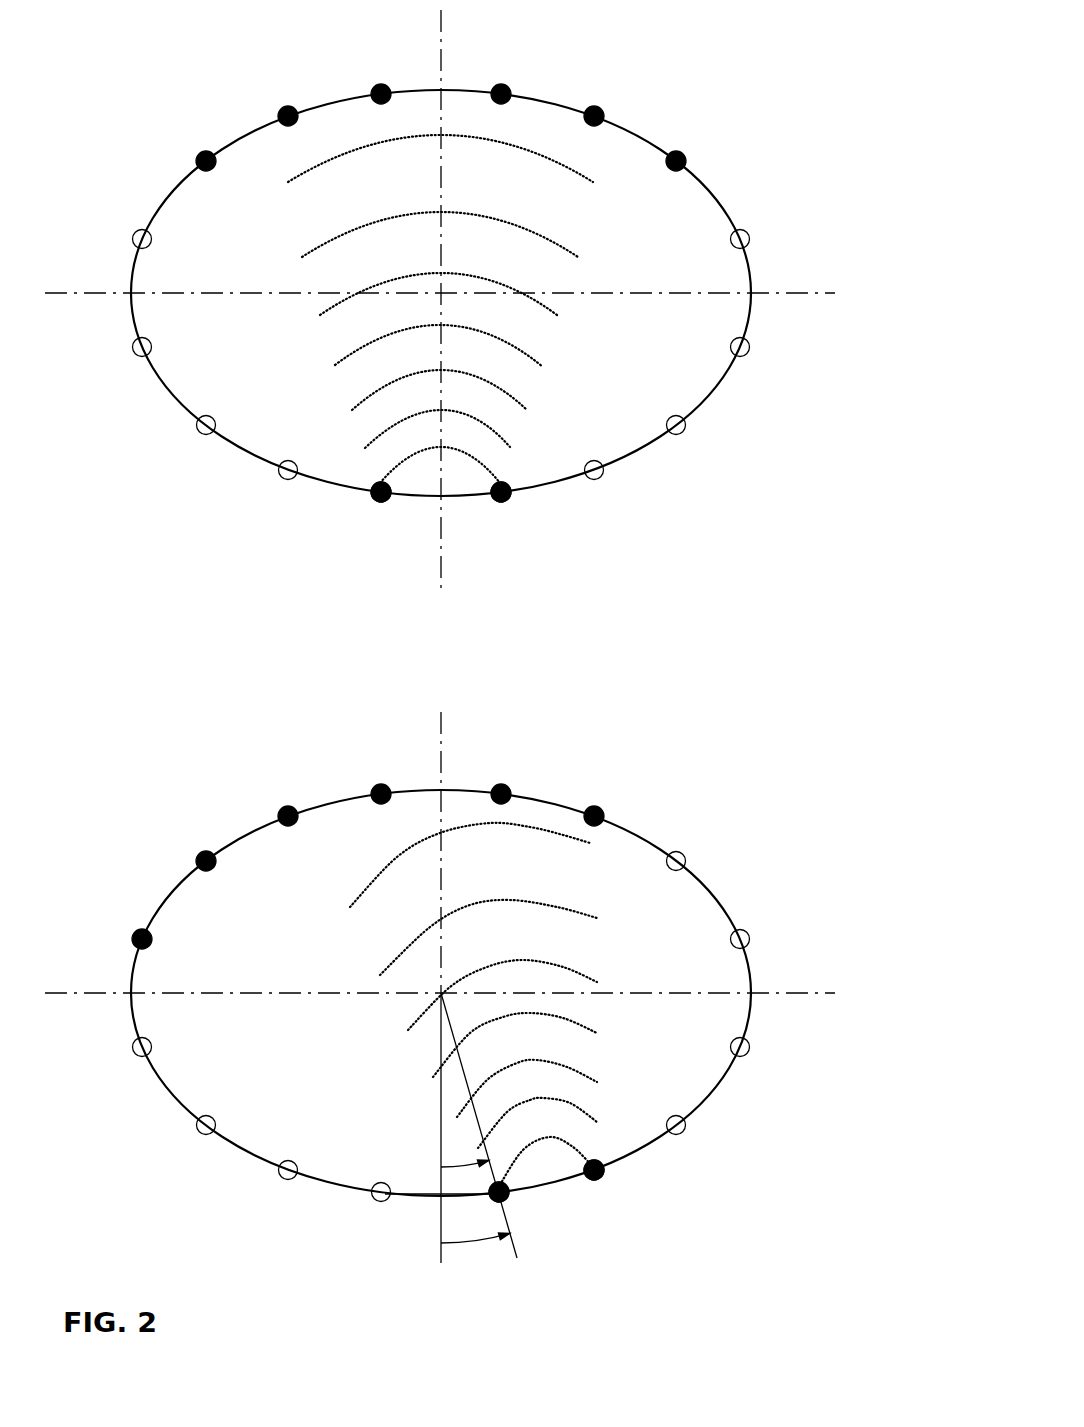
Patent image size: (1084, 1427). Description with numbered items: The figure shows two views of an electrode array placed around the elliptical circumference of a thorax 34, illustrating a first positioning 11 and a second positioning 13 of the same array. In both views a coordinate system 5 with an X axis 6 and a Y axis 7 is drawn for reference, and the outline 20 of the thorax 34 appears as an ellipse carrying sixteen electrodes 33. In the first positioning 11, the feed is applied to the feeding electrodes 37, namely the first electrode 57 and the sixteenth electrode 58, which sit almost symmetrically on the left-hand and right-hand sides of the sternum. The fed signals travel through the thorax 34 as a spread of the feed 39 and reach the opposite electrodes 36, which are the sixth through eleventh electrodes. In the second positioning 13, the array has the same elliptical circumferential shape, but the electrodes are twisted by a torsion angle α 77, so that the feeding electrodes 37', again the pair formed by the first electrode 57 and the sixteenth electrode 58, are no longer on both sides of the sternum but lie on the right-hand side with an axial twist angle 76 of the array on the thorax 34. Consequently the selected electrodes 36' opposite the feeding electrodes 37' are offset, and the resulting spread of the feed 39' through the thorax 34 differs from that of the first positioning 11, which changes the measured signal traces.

The coordinate system 5 is at (447, 498).
The X axis 6 is at (835, 292).
The Y axis 7 is at (446, 30).
The first positioning 11 is at (803, 464).
The second positioning 13 is at (803, 785).
The vehicle outline 20 is at (545, 643).
The electrodes 33 is at (134, 232).
The thorax 34 is at (545, 643).
The opposite electrodes 36 is at (449, 94).
The selected electrodes 36' is at (372, 832).
The feeding electrodes 37 is at (441, 527).
The feeding electrodes 37' is at (589, 1199).
The spread of the feed 39 is at (559, 300).
The spread of the feed 39' is at (583, 960).
The electrode E1 57 is at (377, 503).
The electrode E16 58 is at (503, 500).
The axial twist angle 76 is at (472, 1247).
The torsion angle α 77 is at (462, 1170).